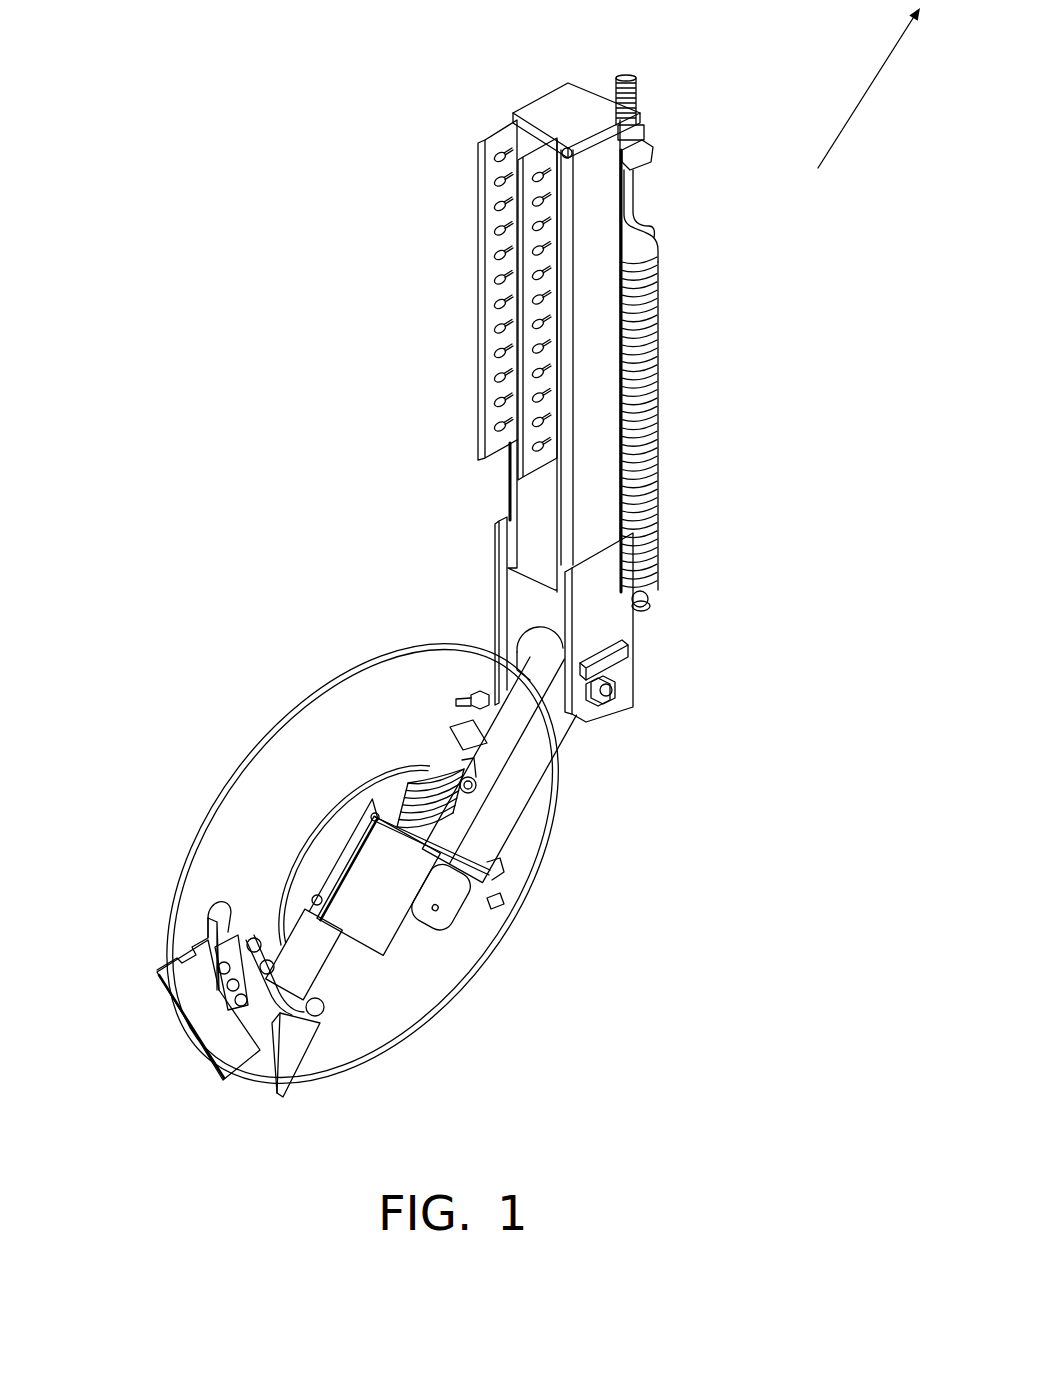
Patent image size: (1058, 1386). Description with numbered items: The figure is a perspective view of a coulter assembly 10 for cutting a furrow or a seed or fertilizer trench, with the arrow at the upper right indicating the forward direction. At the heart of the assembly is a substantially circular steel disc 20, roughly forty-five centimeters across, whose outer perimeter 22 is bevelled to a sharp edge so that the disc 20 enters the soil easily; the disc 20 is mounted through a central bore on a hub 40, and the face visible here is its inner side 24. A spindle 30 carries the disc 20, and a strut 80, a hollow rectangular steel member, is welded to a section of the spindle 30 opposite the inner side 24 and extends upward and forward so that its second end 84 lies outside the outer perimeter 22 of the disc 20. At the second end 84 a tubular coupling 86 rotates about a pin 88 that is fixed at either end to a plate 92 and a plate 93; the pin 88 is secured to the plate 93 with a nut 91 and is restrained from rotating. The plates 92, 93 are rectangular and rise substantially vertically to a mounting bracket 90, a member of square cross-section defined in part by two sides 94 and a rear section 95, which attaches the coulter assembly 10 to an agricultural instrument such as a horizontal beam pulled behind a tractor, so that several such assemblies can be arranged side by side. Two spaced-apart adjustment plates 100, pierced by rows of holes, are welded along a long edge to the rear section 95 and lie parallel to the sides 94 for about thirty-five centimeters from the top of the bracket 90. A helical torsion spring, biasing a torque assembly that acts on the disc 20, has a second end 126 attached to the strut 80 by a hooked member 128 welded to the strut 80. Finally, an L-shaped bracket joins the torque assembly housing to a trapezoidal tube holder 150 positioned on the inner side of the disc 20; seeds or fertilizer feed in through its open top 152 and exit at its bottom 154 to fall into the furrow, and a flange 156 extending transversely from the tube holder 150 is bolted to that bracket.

The coulter assembly 10 is at (313, 598).
The disc 20 is at (233, 853).
The outer perimeter 22 is at (173, 897).
The inner side 24 is at (442, 968).
The spindle 30 is at (440, 920).
The hub 40 is at (310, 860).
The strut 80 is at (560, 733).
The second end 84 is at (520, 657).
The coupling 86 is at (515, 650).
The pin 88 is at (630, 690).
The mounting bracket 90 is at (560, 103).
The nut 91 is at (613, 670).
The plate 92 is at (497, 570).
The plate 93 is at (607, 632).
The sides 94 is at (597, 305).
The rear section 95 is at (540, 498).
The adjustment plates 100 is at (500, 183).
The second end 126 is at (500, 907).
The hooked member 128 is at (503, 880).
The tube holder 150 is at (208, 1013).
The open top 152 is at (160, 967).
The bottom 154 is at (250, 1053).
The flange 156 is at (198, 910).